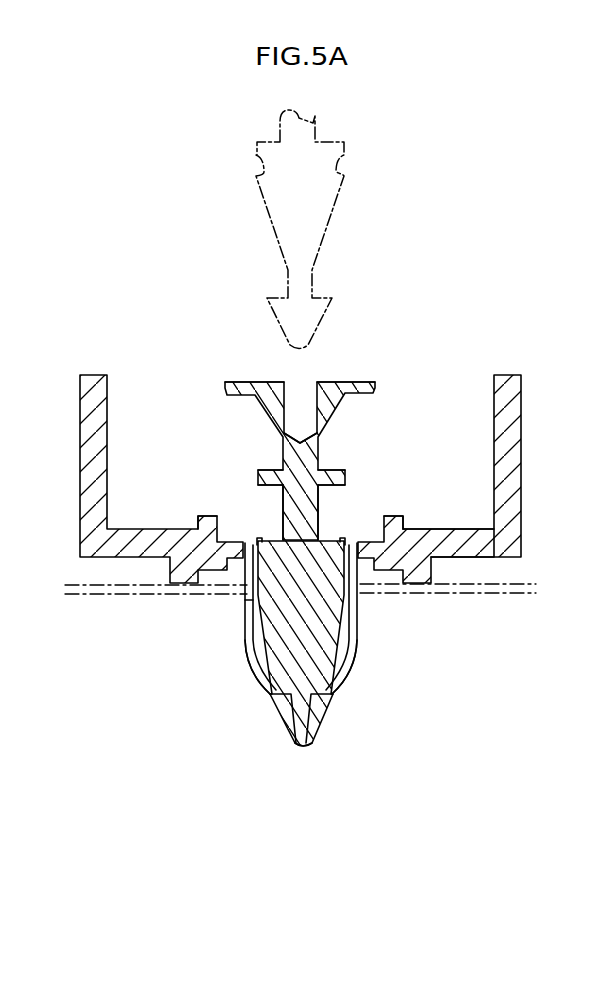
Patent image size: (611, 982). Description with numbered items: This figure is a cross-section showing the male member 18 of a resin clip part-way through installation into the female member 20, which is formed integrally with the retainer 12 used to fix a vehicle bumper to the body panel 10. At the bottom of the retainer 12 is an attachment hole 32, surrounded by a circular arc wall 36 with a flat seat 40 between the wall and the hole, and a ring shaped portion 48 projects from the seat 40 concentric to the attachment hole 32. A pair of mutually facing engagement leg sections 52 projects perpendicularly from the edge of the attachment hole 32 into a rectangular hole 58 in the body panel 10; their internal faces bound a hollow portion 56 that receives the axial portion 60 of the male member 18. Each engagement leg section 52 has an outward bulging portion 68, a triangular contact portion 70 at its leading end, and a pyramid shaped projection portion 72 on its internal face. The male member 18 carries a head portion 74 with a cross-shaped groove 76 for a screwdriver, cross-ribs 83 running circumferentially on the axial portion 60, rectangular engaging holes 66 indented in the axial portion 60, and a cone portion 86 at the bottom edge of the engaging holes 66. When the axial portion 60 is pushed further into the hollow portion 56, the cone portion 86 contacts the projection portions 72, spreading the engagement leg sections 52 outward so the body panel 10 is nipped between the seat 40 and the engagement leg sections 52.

The body panel 10 is at (512, 594).
The retainer 12 is at (331, 479).
The male member 18 is at (345, 218).
The female member 20 is at (359, 688).
The attachment hole 32 is at (250, 555).
The circular arc wall 36 is at (511, 457).
The seat 40 is at (467, 528).
The ring shaped portion 48 is at (404, 508).
The engagement leg section 52 is at (289, 633).
The hollow portion 56 is at (243, 620).
The rectangular hole 58 is at (243, 607).
The axial portion 60 is at (344, 490).
The engaging hole 66 is at (257, 165).
The bulging portion 68 is at (238, 662).
The contact portion 70 is at (273, 700).
The projection portion 72 is at (291, 735).
The head portion 74 is at (353, 388).
The cross-shaped groove 76 is at (314, 408).
The cross-rib 83 is at (346, 480).
The cone portion 86 is at (358, 617).